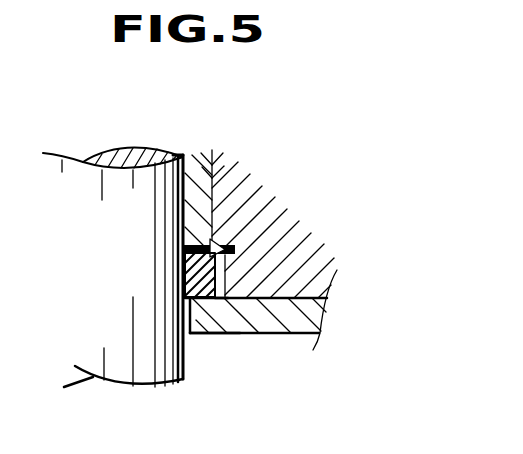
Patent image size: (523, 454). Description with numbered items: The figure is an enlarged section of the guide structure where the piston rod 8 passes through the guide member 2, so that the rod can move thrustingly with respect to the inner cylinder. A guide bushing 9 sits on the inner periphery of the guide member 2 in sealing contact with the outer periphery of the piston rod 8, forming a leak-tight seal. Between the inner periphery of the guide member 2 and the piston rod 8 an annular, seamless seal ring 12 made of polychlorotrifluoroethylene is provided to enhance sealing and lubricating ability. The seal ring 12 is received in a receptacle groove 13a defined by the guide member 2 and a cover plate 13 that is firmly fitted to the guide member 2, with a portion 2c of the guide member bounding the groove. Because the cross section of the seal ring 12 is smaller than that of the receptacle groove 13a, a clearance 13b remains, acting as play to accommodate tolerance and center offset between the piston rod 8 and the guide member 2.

The guide member 2 is at (302, 285).
The bore of body 2c is at (245, 267).
The piston rod 8 is at (118, 312).
The guide bushing 9 is at (237, 160).
The seal ring 12 is at (236, 243).
The cover plate 13 is at (270, 340).
The receptacle groove 13a is at (183, 248).
The clearance 13b is at (220, 336).